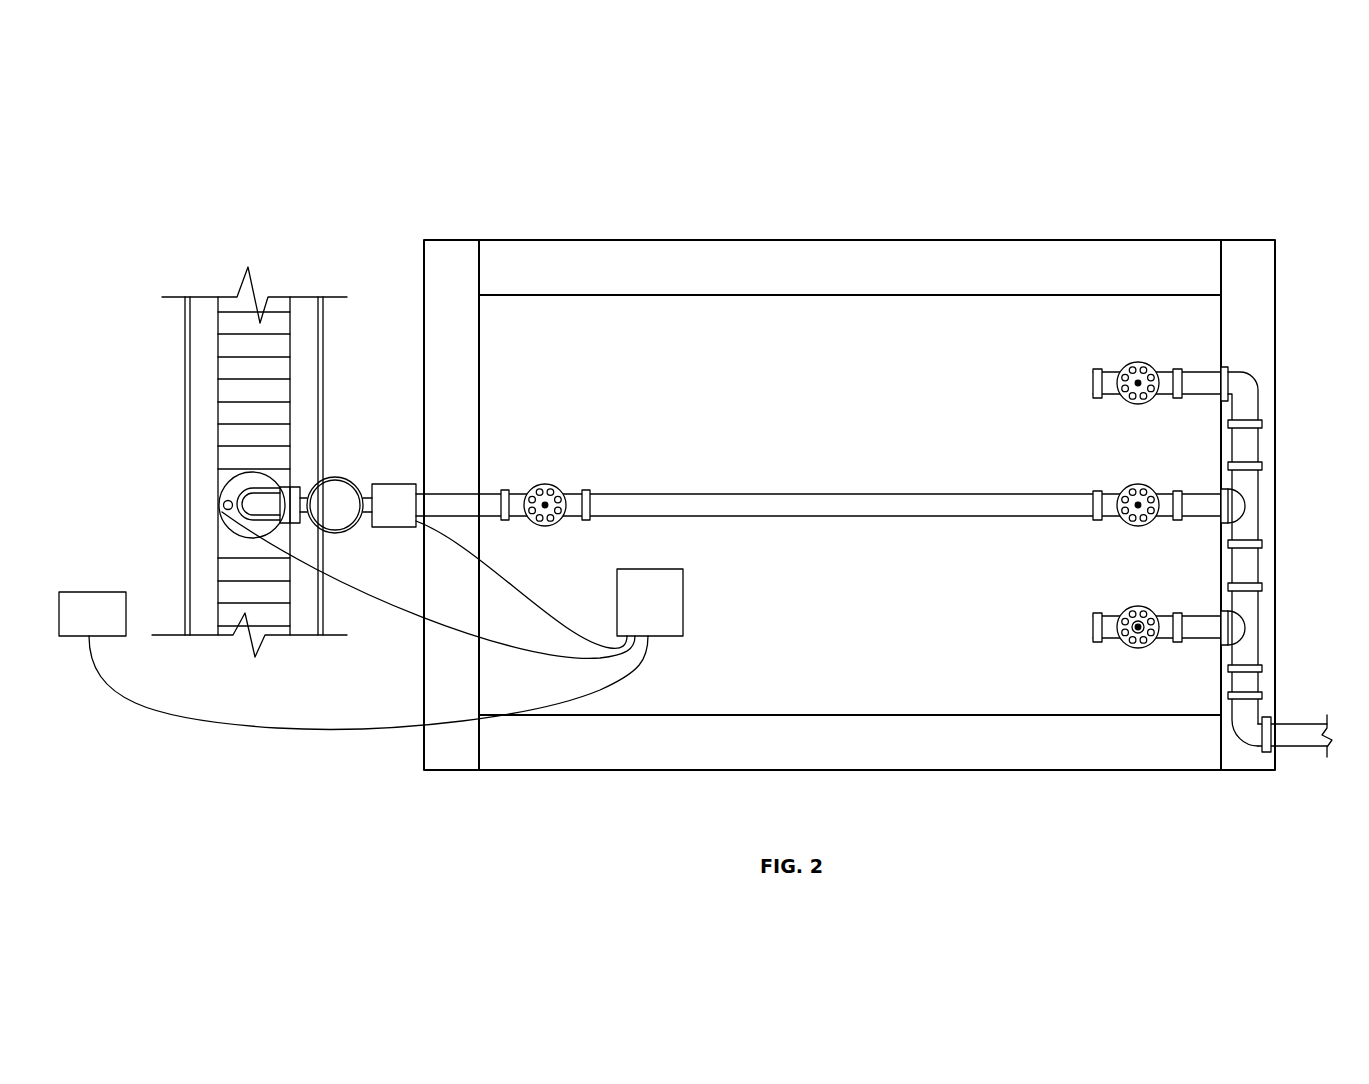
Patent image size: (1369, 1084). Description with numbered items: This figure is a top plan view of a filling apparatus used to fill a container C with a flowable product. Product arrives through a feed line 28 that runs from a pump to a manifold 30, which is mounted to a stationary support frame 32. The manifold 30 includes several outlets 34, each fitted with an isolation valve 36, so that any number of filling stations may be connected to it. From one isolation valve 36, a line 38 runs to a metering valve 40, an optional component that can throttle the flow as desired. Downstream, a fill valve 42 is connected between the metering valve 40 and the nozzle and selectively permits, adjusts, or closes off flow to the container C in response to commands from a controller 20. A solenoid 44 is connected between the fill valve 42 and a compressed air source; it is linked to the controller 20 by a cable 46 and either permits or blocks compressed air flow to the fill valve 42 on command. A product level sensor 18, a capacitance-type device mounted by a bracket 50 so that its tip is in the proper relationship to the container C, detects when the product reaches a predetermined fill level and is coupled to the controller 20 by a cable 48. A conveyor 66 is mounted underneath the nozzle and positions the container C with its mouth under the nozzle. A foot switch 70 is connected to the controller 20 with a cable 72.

The conveyor 66 is at (283, 302).
The container C is at (277, 485).
The bracket 50 is at (222, 493).
The product level sensor 18 is at (223, 505).
The fill valve 42 is at (340, 483).
The solenoid 44 is at (388, 492).
The stationary support frame 32 is at (982, 247).
The line 38 is at (722, 498).
The metering valve 40 is at (553, 497).
The isolation valve 36 is at (1133, 364).
The outlets 34 is at (1190, 373).
The manifold 30 is at (1252, 496).
The feed line 28 is at (1300, 732).
The cable 46 is at (520, 597).
The cable 48 is at (378, 592).
The controller 20 is at (662, 613).
The foot switch 70 is at (105, 623).
The cable 72 is at (275, 727).